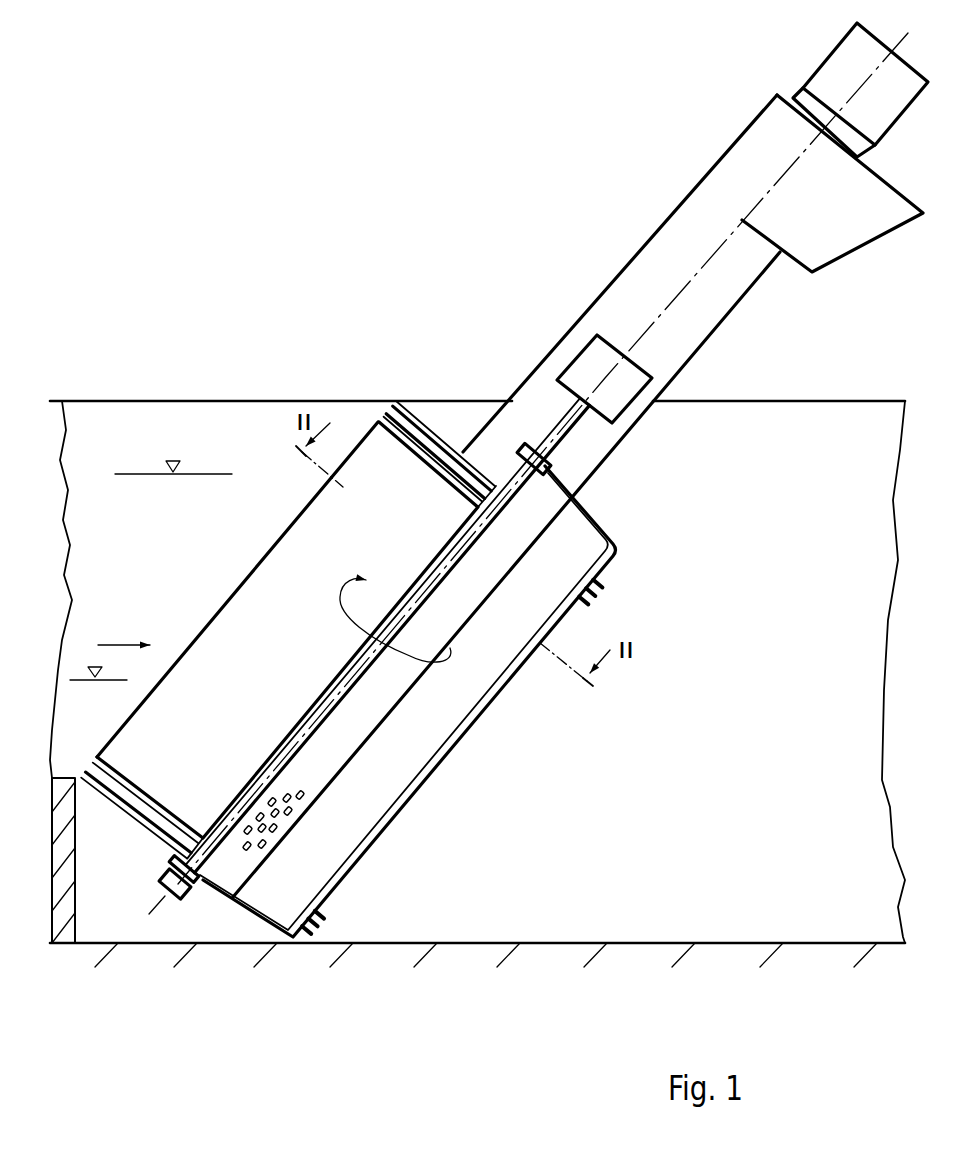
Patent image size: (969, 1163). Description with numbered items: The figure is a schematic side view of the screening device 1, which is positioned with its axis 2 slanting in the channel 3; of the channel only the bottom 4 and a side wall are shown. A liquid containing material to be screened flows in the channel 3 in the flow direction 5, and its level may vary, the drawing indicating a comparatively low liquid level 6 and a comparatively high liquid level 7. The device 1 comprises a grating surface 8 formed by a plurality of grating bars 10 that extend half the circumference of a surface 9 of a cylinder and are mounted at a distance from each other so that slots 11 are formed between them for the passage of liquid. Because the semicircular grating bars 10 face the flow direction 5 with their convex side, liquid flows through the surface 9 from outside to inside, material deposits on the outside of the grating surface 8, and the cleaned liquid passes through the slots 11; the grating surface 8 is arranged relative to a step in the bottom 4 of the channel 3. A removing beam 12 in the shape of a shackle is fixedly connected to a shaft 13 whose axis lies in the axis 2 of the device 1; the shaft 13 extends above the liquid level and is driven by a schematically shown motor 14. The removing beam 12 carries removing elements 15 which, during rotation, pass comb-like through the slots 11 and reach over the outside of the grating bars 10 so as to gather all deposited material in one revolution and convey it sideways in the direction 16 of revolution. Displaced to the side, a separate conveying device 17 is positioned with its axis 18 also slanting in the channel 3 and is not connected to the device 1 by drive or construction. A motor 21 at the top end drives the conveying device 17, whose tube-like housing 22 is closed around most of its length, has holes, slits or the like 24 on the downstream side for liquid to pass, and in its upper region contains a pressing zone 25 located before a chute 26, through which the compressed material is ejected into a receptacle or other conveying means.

The device 1 is at (497, 306).
The axis 2 is at (557, 428).
The channel 3 is at (127, 392).
The bottom 4 is at (540, 944).
The flow direction 5 is at (108, 645).
The low liquid level 6 is at (89, 449).
The high liquid level 7 is at (173, 459).
The grating surface 8 is at (272, 595).
The surface of a cylinder 9 is at (360, 430).
The grating bars 10 is at (382, 415).
The slots 11 is at (440, 455).
The removing beam 12 is at (620, 526).
The shaft 13 is at (345, 688).
The motor 14 is at (630, 382).
The removing elements 15 is at (588, 600).
The direction of revolution 16 is at (478, 691).
The conveying device 17 is at (650, 197).
The axis 18 is at (658, 298).
The motor 21 is at (845, 82).
The housing 22 is at (500, 442).
The holes, slits or the like 24 is at (275, 832).
The pressing zone 25 is at (690, 172).
The chute 26 is at (812, 225).